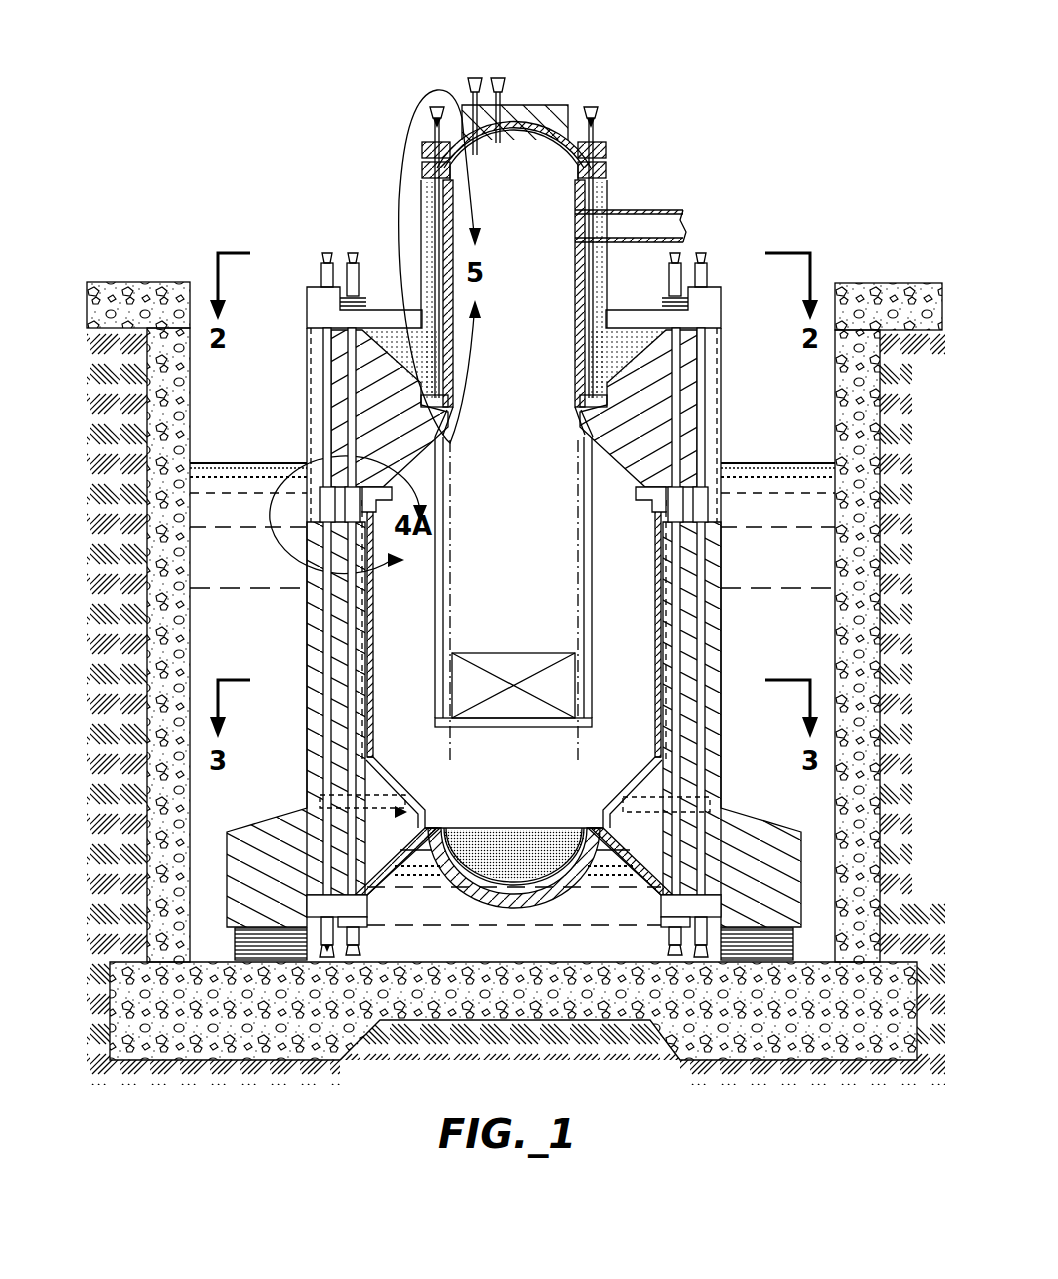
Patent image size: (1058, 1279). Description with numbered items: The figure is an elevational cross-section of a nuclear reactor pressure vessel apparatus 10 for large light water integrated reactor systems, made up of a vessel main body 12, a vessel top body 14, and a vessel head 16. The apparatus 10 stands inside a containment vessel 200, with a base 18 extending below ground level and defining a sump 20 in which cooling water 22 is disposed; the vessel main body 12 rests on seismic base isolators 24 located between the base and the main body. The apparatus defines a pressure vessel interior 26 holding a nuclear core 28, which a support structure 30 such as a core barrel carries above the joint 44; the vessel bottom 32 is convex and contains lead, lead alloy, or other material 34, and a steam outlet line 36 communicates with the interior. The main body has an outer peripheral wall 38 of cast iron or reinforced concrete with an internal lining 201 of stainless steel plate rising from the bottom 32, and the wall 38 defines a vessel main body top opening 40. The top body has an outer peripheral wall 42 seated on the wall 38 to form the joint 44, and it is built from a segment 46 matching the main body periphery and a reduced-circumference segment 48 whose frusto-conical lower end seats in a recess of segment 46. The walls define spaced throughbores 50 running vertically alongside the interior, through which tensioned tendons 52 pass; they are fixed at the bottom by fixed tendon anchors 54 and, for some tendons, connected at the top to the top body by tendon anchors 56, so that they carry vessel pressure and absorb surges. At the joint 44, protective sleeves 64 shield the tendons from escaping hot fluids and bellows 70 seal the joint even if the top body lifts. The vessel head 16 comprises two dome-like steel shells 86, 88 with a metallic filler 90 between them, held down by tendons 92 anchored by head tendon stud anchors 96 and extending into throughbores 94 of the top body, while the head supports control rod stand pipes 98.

The pressure vessel apparatus 10 is at (665, 155).
The vessel main body 12 is at (734, 812).
The vessel top body 14 is at (300, 345).
The vessel head 16 is at (556, 105).
The base 18 is at (565, 945).
The sump 20 is at (872, 610).
The cooling water 22 is at (754, 463).
The seismic base isolators 24 is at (235, 940).
The pressure vessel interior 26 is at (548, 213).
The nuclear core 28 is at (513, 720).
The support structure 30 is at (597, 633).
The vessel bottom 32 is at (435, 866).
The material 34 is at (515, 830).
The steam outlet line 36 is at (684, 205).
The outer peripheral wall 38 is at (514, 627).
The vessel main body top opening 40 is at (432, 468).
The outer peripheral wall 42 is at (307, 448).
The joint 44 is at (307, 556).
The segment 46 is at (367, 352).
The segment 48 is at (427, 222).
The throughbores 50 is at (357, 374).
The tendons 52 is at (345, 602).
The fixed tendon anchors 54 is at (355, 953).
The tendon anchors 56 is at (322, 268).
The protective sleeves 64 is at (365, 493).
The bellows 70 is at (327, 503).
The dome-like steel shell 86 is at (614, 150).
The dome-like steel shell 88 is at (612, 175).
The metallic filler 90 is at (540, 105).
The tendons 92 is at (430, 193).
The throughbores 94 is at (577, 312).
The head tendon stud anchors 96 is at (447, 112).
The control rod stand pipes 98 is at (498, 78).
The containment vessel 200 is at (863, 283).
The internal lining 201 is at (453, 207).